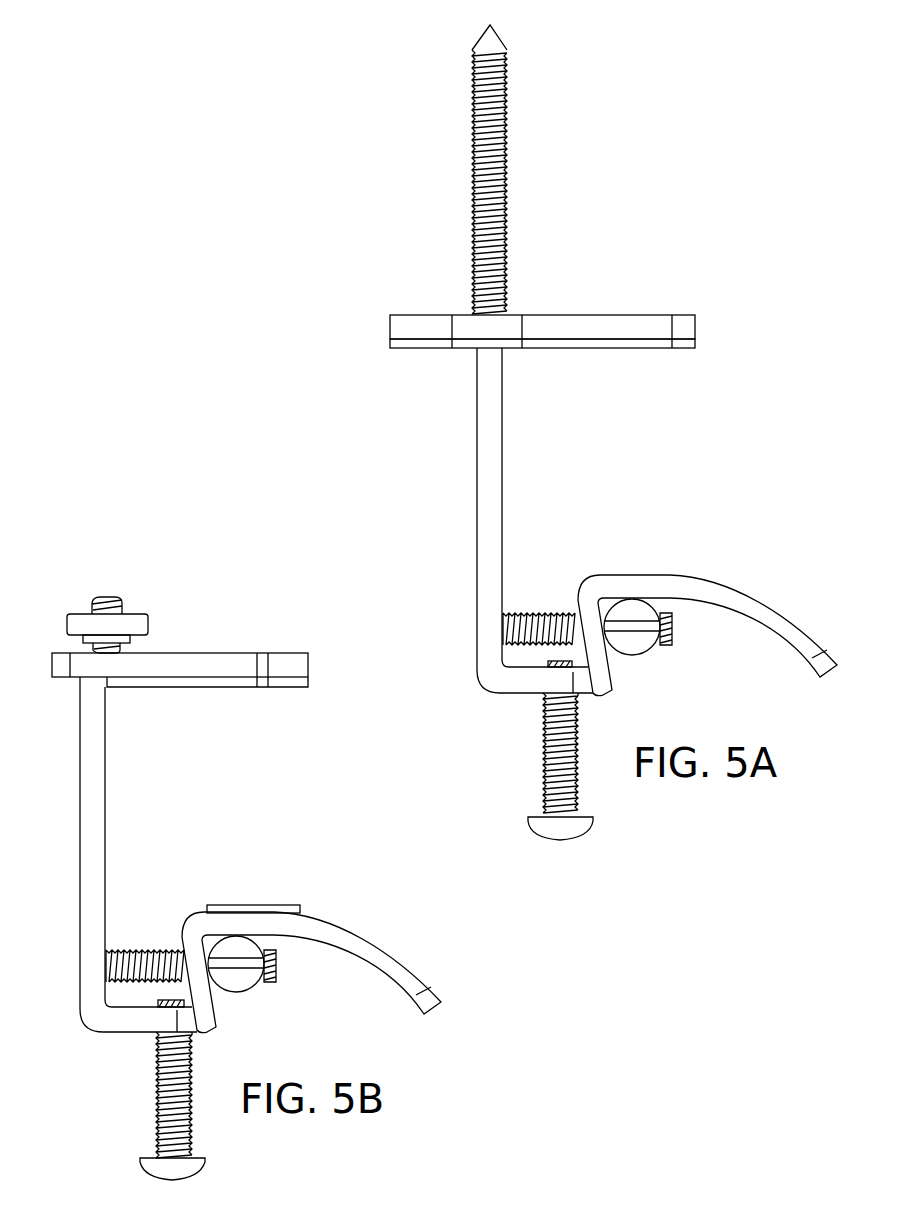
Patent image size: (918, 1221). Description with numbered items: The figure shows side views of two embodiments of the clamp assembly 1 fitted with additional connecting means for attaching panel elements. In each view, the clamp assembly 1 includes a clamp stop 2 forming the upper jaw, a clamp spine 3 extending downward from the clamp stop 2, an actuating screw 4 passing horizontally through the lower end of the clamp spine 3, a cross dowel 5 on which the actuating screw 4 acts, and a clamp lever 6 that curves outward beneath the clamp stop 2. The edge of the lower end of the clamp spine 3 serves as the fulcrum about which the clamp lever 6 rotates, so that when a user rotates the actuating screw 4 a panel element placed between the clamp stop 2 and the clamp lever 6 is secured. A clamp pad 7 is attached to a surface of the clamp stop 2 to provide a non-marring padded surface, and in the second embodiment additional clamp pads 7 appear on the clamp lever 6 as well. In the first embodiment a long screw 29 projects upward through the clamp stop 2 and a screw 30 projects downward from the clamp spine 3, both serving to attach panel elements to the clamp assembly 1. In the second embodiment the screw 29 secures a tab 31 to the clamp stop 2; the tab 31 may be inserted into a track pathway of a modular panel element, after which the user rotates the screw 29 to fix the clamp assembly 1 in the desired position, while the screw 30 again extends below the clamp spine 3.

In FIG. 5A, the clamp assembly 1 is at (670, 70).
In FIG. 5B, the clamp assembly 1 is at (297, 603).
In FIG. 5A, the clamp stop 2 is at (611, 315).
In FIG. 5B, the clamp stop 2 is at (228, 653).
In FIG. 5A, the clamp spine 3 is at (477, 430).
In FIG. 5B, the clamp spine 3 is at (80, 770).
In FIG. 5A, the actuating screw 4 is at (532, 613).
In FIG. 5B, the actuating screw 4 is at (137, 950).
In FIG. 5A, the cross dowel 5 is at (633, 655).
In FIG. 5B, the cross dowel 5 is at (237, 993).
In FIG. 5A, the clamp lever 6 is at (742, 575).
In FIG. 5B, the clamp lever 6 is at (342, 915).
In FIG. 5A, the clamp pad 7 is at (645, 348).
In FIG. 5B, the clamp pad 7 is at (283, 687).
In FIG. 5A, the screw 29 is at (471, 146).
In FIG. 5B, the screw 29 is at (108, 597).
In FIG. 5A, the screw 30 is at (543, 765).
In FIG. 5B, the screw 30 is at (156, 1105).
In FIG. 5B, the tab 31 is at (68, 625).